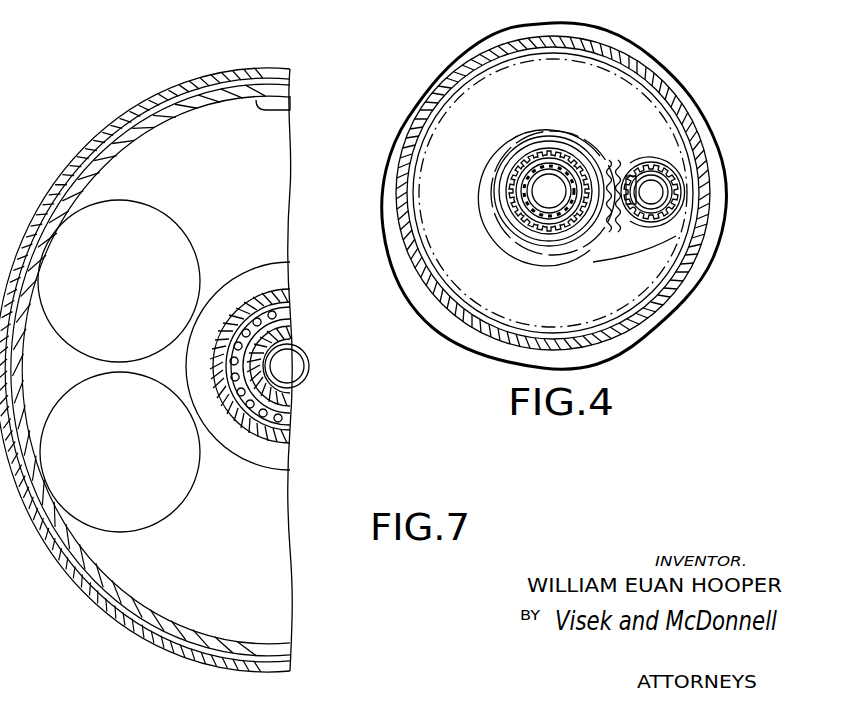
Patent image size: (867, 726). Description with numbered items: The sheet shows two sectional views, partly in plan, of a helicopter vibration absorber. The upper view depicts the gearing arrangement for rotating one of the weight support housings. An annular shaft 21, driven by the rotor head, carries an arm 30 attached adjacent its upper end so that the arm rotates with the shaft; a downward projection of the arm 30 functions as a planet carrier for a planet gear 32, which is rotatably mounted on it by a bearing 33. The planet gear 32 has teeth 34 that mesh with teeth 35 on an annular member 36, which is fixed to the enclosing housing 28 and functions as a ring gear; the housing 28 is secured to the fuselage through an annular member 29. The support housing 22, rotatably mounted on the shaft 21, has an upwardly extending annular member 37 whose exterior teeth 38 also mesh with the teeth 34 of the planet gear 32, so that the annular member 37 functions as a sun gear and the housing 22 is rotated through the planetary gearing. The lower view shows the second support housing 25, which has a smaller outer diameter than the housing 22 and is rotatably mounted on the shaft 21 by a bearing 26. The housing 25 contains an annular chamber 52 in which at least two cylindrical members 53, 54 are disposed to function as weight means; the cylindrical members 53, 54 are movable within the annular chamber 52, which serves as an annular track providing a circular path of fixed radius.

In FIG. 7, the annular shaft 21 is at (298, 397).
In FIG. 4, the annular shaft 21 is at (542, 156).
In FIG. 4, the support housing 22 is at (492, 143).
In FIG. 7, the second support housing 25 is at (254, 108).
In FIG. 7, the bearing 26 is at (293, 432).
In FIG. 7, the housing 28 is at (64, 156).
In FIG. 4, the housing 28 is at (660, 70).
In FIG. 7, the annular member 29 is at (286, 377).
In FIG. 4, the annular member 29 is at (538, 190).
In FIG. 4, the arm 30 is at (634, 176).
In FIG. 4, the planet gear 32 is at (634, 221).
In FIG. 4, the bearing 33 is at (666, 176).
In FIG. 4, the teeth 34 is at (675, 240).
In FIG. 4, the teeth 35 is at (683, 214).
In FIG. 4, the annular member 36 is at (681, 200).
In FIG. 4, the annular member 37 is at (580, 134).
In FIG. 4, the teeth 38 is at (617, 224).
In FIG. 7, the annular chamber 52 is at (238, 190).
In FIG. 7, the cylindrical member 53 is at (145, 453).
In FIG. 7, the cylindrical member 54 is at (142, 278).